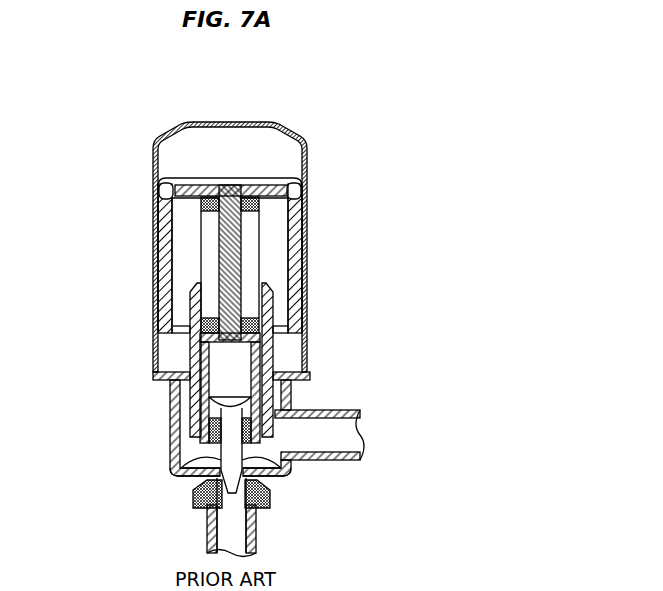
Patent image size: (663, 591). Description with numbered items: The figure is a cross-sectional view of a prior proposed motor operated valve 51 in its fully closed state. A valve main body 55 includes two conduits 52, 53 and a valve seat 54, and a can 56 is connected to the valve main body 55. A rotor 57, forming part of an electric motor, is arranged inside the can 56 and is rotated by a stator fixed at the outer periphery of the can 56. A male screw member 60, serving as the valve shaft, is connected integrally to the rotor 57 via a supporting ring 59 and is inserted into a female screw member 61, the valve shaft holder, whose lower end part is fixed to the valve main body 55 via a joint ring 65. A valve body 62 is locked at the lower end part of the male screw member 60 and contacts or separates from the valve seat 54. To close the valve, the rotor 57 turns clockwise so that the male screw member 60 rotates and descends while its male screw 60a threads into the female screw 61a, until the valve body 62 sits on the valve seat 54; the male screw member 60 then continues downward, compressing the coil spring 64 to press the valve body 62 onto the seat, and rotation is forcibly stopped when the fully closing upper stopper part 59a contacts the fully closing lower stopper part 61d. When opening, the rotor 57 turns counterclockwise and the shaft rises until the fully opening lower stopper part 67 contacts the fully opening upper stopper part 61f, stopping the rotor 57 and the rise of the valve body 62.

The motor operated valve 51 is at (246, 81).
The conduit 52 is at (325, 410).
The conduit 53 is at (256, 520).
The valve seat 54 is at (185, 480).
The valve main body 55 is at (170, 424).
The can 56 is at (214, 124).
The rotor 57 is at (170, 183).
The supporting ring 59 is at (263, 185).
The fully closing upper stopper part 59a is at (216, 212).
The male screw member 60 is at (232, 184).
The male screw 60a is at (276, 210).
The female screw member 61 is at (163, 257).
The female screw 61a is at (276, 240).
The fully closing lower stopper part 61d is at (160, 193).
The fully opening upper stopper part 61f is at (266, 306).
The valve body 62 is at (275, 478).
The coil spring 64 is at (233, 370).
The joint ring 65 is at (158, 378).
The fully opening lower stopper part 67 is at (200, 312).